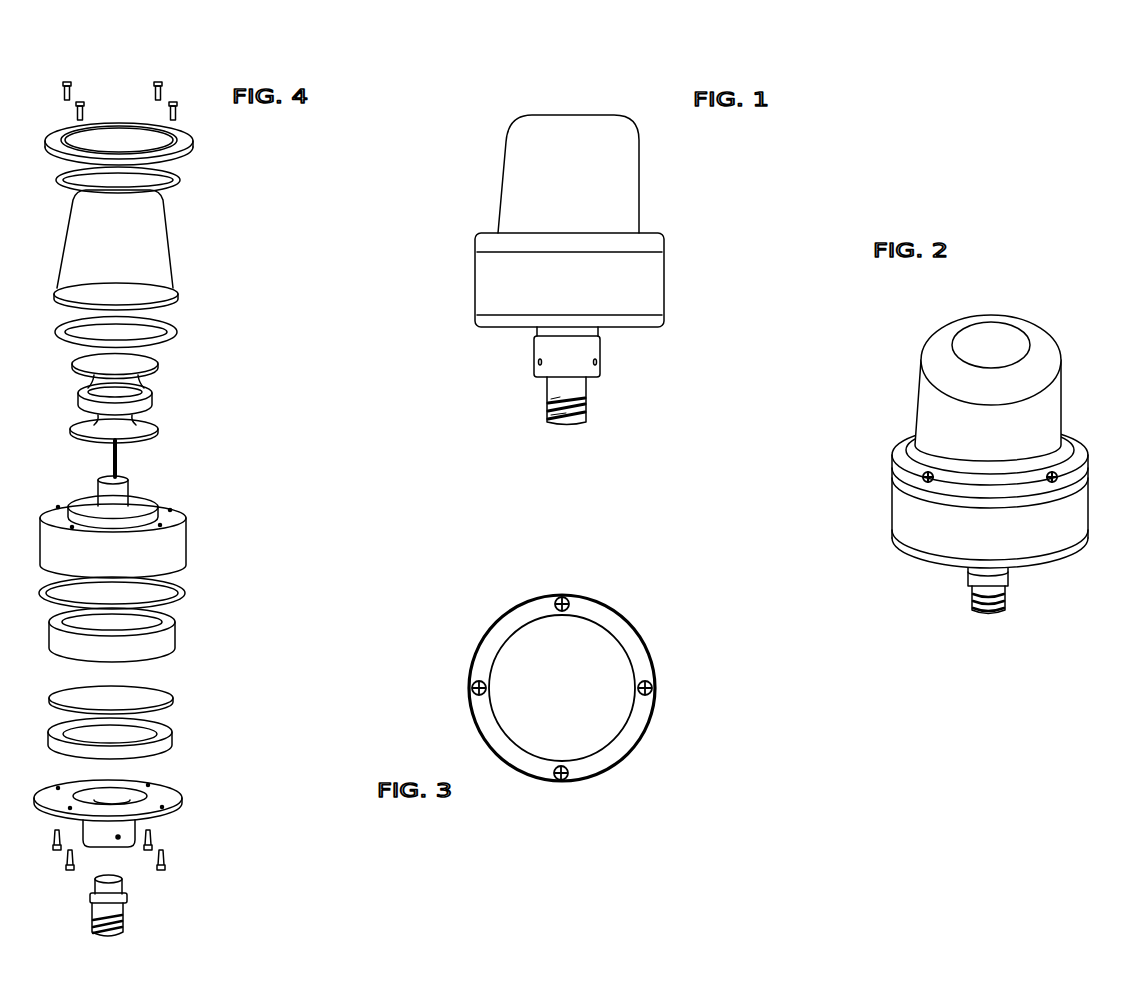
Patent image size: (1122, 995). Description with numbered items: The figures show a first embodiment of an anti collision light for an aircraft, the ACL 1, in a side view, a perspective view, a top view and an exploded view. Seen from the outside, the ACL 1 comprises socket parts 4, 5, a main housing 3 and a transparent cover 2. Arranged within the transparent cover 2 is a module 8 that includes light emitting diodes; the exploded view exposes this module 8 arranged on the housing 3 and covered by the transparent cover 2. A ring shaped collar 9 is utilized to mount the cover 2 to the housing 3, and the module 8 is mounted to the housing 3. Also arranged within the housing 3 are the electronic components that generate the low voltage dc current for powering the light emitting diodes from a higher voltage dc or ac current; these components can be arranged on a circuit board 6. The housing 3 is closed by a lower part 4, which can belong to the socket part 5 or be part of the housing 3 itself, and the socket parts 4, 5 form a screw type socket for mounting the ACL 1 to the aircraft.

In FIG. 1, the anti collision light (ACL) 1 is at (500, 166).
In FIG. 2, the anti collision light (ACL) 1 is at (886, 441).
In FIG. 3, the anti collision light (ACL) 1 is at (657, 665).
In FIG. 1, the transparent cover 2 is at (625, 185).
In FIG. 2, the transparent cover 2 is at (1033, 362).
In FIG. 3, the transparent cover 2 is at (595, 677).
In FIG. 4, the transparent cover 2 is at (155, 244).
In FIG. 1, the main housing 3 is at (487, 277).
In FIG. 2, the main housing 3 is at (902, 503).
In FIG. 3, the main housing 3 is at (625, 742).
In FIG. 4, the main housing 3 is at (168, 550).
In FIG. 1, the lower part (socket part) 4 is at (546, 348).
In FIG. 2, the lower part (socket part) 4 is at (990, 573).
In FIG. 4, the lower part (socket part) 4 is at (104, 838).
In FIG. 1, the socket part 5 is at (550, 408).
In FIG. 2, the socket part 5 is at (983, 607).
In FIG. 4, the socket part 5 is at (110, 912).
In FIG. 4, the circuit board 6 is at (145, 702).
In FIG. 4, the module 8 is at (161, 393).
In FIG. 4, the ring shaped collar 9 is at (187, 137).